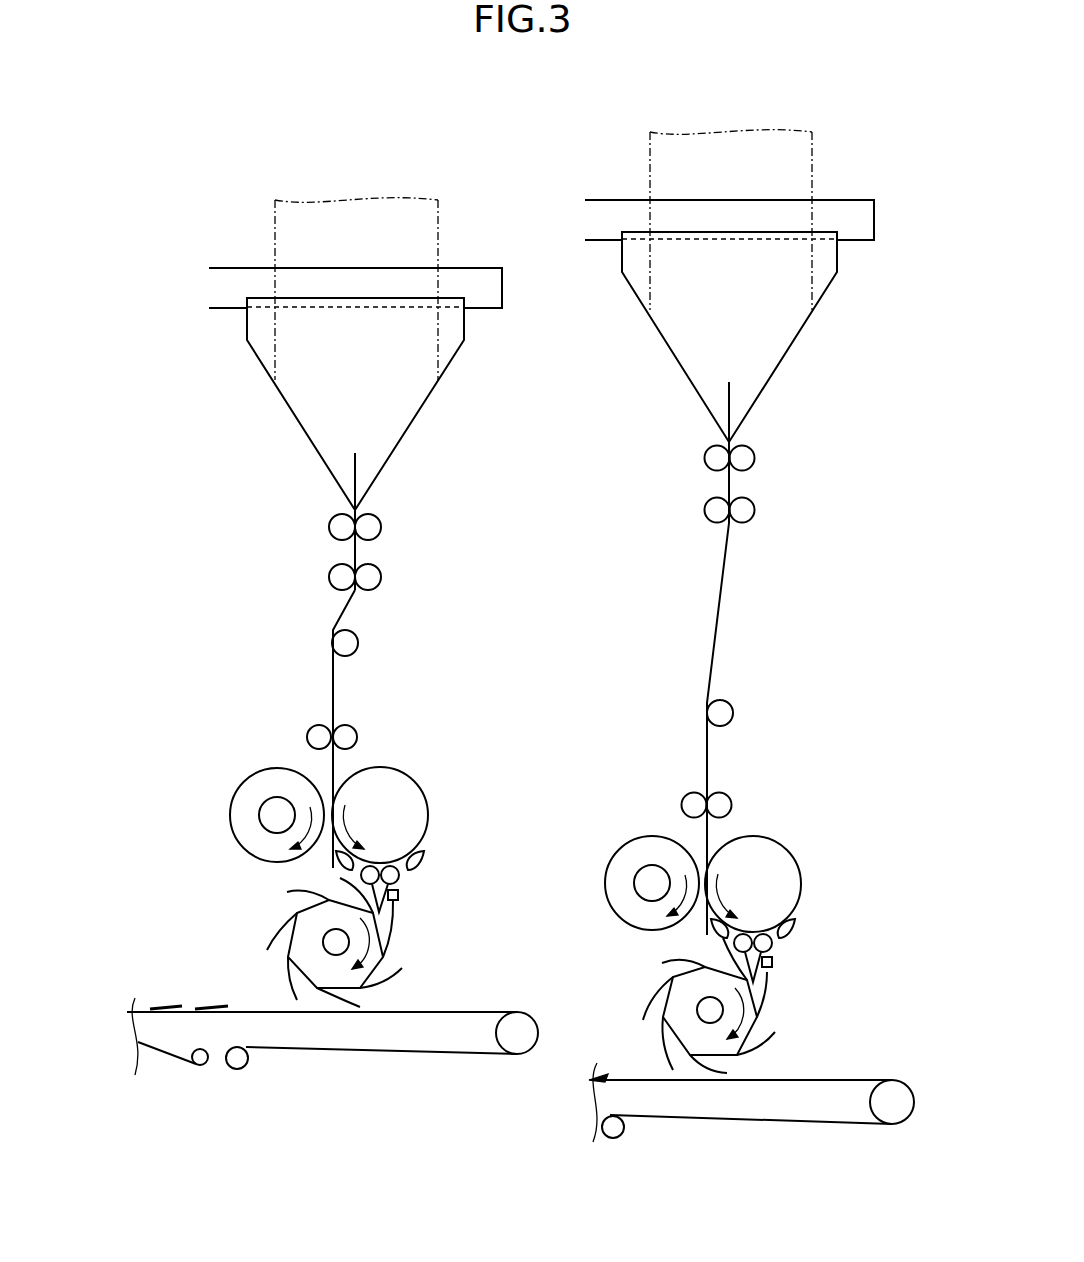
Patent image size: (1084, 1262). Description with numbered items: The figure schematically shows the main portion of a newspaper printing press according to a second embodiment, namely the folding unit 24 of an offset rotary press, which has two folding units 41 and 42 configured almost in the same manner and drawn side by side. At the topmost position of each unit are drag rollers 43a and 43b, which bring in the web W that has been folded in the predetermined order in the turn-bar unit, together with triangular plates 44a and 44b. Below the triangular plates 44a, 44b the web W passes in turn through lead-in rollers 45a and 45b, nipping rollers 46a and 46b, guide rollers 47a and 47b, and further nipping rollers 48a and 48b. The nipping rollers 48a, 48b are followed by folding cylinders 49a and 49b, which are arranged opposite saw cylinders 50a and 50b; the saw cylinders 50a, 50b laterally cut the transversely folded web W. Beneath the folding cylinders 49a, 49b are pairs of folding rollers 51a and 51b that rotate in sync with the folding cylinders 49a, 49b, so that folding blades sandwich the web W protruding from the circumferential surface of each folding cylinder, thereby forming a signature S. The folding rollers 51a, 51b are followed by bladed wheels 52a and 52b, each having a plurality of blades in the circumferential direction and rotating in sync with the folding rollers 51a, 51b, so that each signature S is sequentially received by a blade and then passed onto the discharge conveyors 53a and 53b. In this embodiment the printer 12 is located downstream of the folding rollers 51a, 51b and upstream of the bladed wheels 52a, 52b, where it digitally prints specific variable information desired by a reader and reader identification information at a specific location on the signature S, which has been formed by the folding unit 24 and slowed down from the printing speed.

The folding unit 24 is at (590, 104).
The folding unit 41 is at (206, 520).
The folding unit 42 is at (850, 559).
The drag roller 43a is at (452, 277).
The drag roller 43b is at (824, 210).
The triangular plate 44a is at (410, 408).
The triangular plate 44b is at (786, 344).
The lead-in rollers 45a is at (332, 527).
The lead-in rollers 45b is at (707, 458).
The nipping rollers 46a is at (332, 577).
The nipping rollers 46b is at (707, 510).
The guide roller 47a is at (356, 643).
The guide roller 47b is at (731, 713).
The nipping rollers 48a is at (320, 732).
The nipping rollers 48b is at (693, 800).
The folding cylinder 49a is at (418, 803).
The folding cylinder 49b is at (793, 873).
The saw cylinder 50a is at (268, 778).
The saw cylinder 50b is at (640, 845).
The pair of folding rollers 51a is at (358, 877).
The pair of folding rollers 51b is at (730, 945).
The bladed wheel 52a is at (262, 910).
The bladed wheel 52b is at (790, 1028).
The discharge conveyor 53a is at (362, 1038).
The discharge conveyor 53b is at (735, 1105).
The printer 12 is at (399, 900).
The web W is at (334, 686).
The signature S is at (215, 1007).